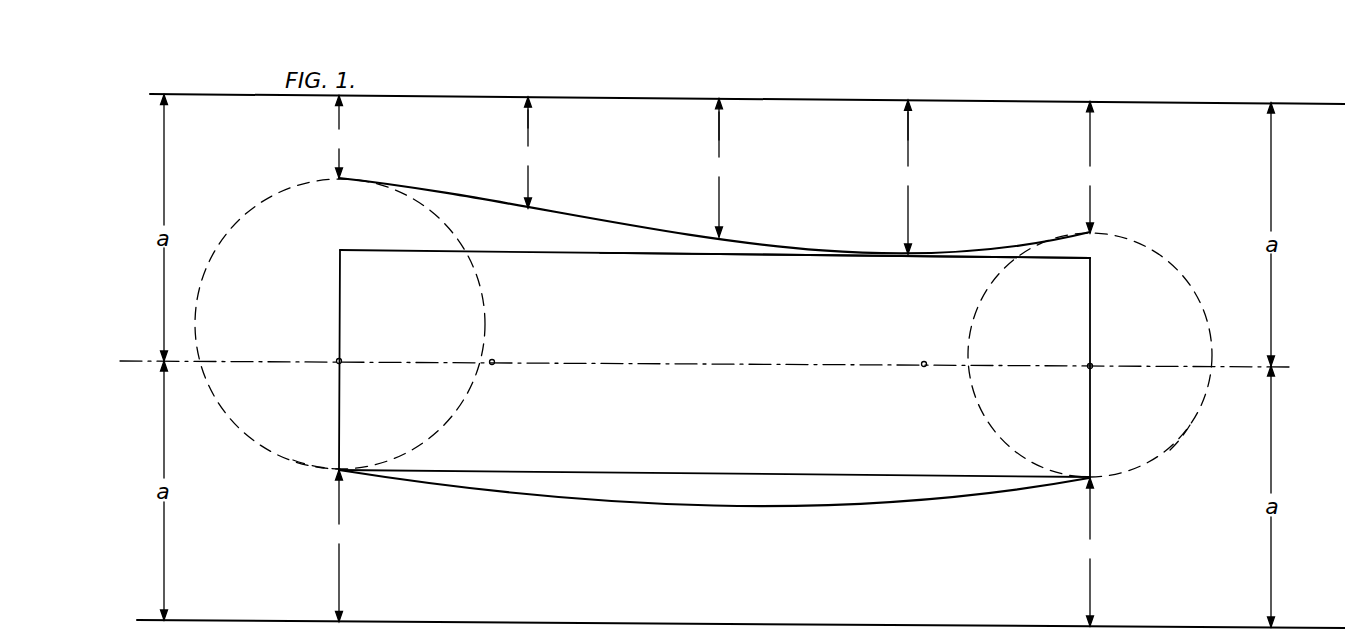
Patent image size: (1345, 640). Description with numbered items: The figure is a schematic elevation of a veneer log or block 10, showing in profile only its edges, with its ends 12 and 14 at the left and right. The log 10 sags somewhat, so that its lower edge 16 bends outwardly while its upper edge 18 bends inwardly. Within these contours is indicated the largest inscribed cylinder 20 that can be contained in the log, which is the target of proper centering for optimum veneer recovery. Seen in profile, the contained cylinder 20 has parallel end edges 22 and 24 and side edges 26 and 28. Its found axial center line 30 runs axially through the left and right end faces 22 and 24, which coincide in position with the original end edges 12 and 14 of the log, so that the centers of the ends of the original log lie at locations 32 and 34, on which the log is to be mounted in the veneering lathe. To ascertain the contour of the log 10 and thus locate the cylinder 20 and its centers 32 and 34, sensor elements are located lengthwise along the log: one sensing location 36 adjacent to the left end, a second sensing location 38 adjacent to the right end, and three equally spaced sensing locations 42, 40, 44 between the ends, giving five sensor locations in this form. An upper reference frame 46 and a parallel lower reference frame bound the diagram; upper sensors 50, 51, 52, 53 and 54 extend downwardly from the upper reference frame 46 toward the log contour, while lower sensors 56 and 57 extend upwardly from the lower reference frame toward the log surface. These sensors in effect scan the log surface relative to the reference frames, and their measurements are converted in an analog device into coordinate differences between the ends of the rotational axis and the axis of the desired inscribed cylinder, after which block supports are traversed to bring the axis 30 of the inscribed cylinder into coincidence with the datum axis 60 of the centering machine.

The veneer log or block 10 is at (722, 362).
The end of log 12 is at (294, 460).
The end of log 14 is at (1187, 418).
The lower curved surface 16 is at (735, 508).
The upper edge of log 18 is at (792, 237).
The cylinder 20 is at (512, 256).
The end edge of cylinder 22 is at (340, 303).
The end edge of cylinder 24 is at (1090, 320).
The side edge of cylinder 26 is at (662, 257).
The side edge of cylinder 28 is at (758, 471).
The axial center line 30 is at (922, 366).
The center of log end 32 is at (337, 363).
The center of log end 34 is at (1092, 368).
The sensing location 36 is at (281, 192).
The sensing location 38 is at (1170, 268).
The sensing location 40 is at (721, 128).
The sensing location 42 is at (530, 118).
The sensing location 44 is at (910, 125).
The upper reference frame 46 is at (1268, 103).
The upper sensor 50 is at (345, 137).
The upper sensor 51 is at (530, 152).
The upper sensor 52 is at (727, 168).
The upper sensor 53 is at (908, 177).
The upper sensor 54 is at (1092, 167).
The lower sensor 56 is at (337, 546).
The lower sensor 57 is at (1080, 552).
The datum axis 60 is at (494, 364).